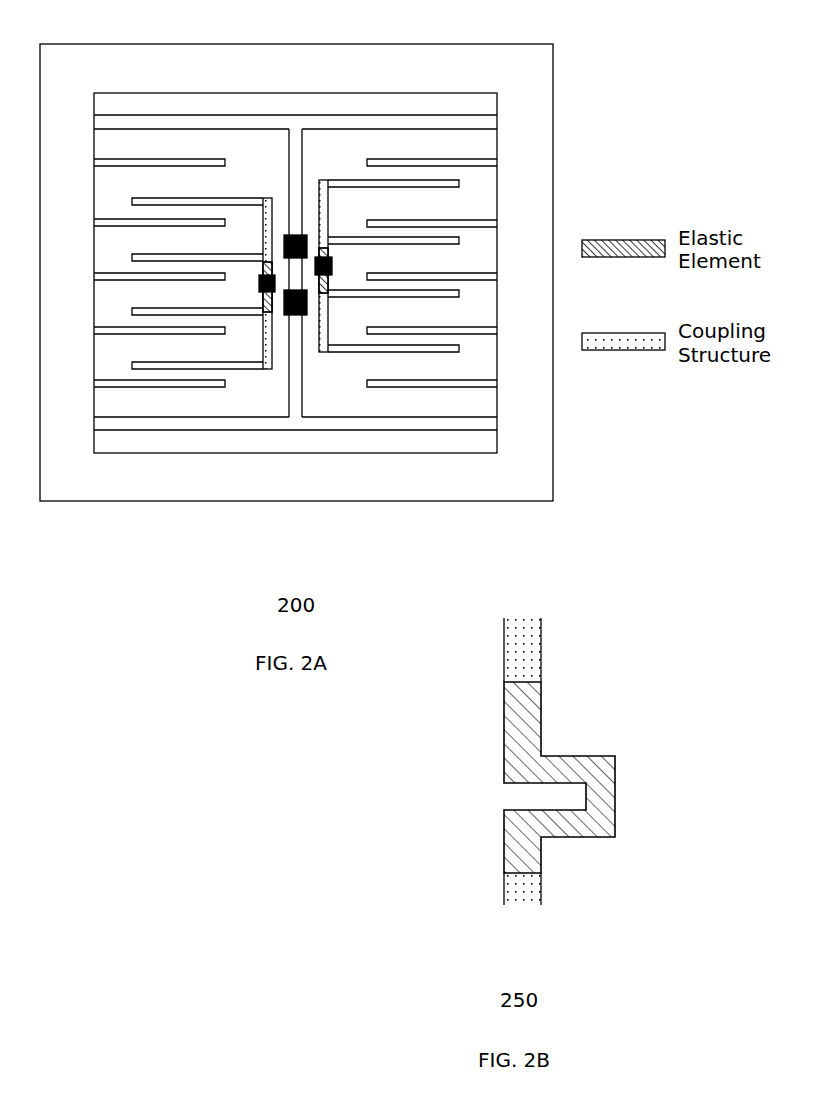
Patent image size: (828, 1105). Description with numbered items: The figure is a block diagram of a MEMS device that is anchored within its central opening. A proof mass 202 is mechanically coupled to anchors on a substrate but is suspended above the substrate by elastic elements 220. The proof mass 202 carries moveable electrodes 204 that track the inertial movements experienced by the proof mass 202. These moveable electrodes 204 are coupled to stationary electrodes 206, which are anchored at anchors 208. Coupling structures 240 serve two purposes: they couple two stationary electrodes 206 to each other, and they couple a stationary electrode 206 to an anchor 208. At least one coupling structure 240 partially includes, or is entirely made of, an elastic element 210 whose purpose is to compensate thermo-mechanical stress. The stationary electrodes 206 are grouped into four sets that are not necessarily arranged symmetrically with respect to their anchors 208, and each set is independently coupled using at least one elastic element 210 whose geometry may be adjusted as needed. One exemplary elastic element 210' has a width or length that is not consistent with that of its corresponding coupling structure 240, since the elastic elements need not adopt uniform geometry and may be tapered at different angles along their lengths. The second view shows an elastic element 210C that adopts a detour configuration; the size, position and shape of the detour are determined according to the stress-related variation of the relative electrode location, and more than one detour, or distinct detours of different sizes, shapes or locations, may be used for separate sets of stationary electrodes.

In FIG. 2A, the proof mass 202 is at (556, 55).
In FIG. 2A, the moveable electrodes 204 is at (422, 158).
In FIG. 2A, the stationary electrodes 206 is at (165, 198).
In FIG. 2A, the anchor 208 is at (314, 266).
In FIG. 2A, the elastic element 210 is at (347, 270).
In FIG. 2A, the elastic element 210' is at (238, 287).
In FIG. 2A, the elastic elements 220 is at (304, 160).
In FIG. 2A, the coupling structure 240 is at (267, 197).
In FIG. 2B, the elastic element 210C is at (617, 775).